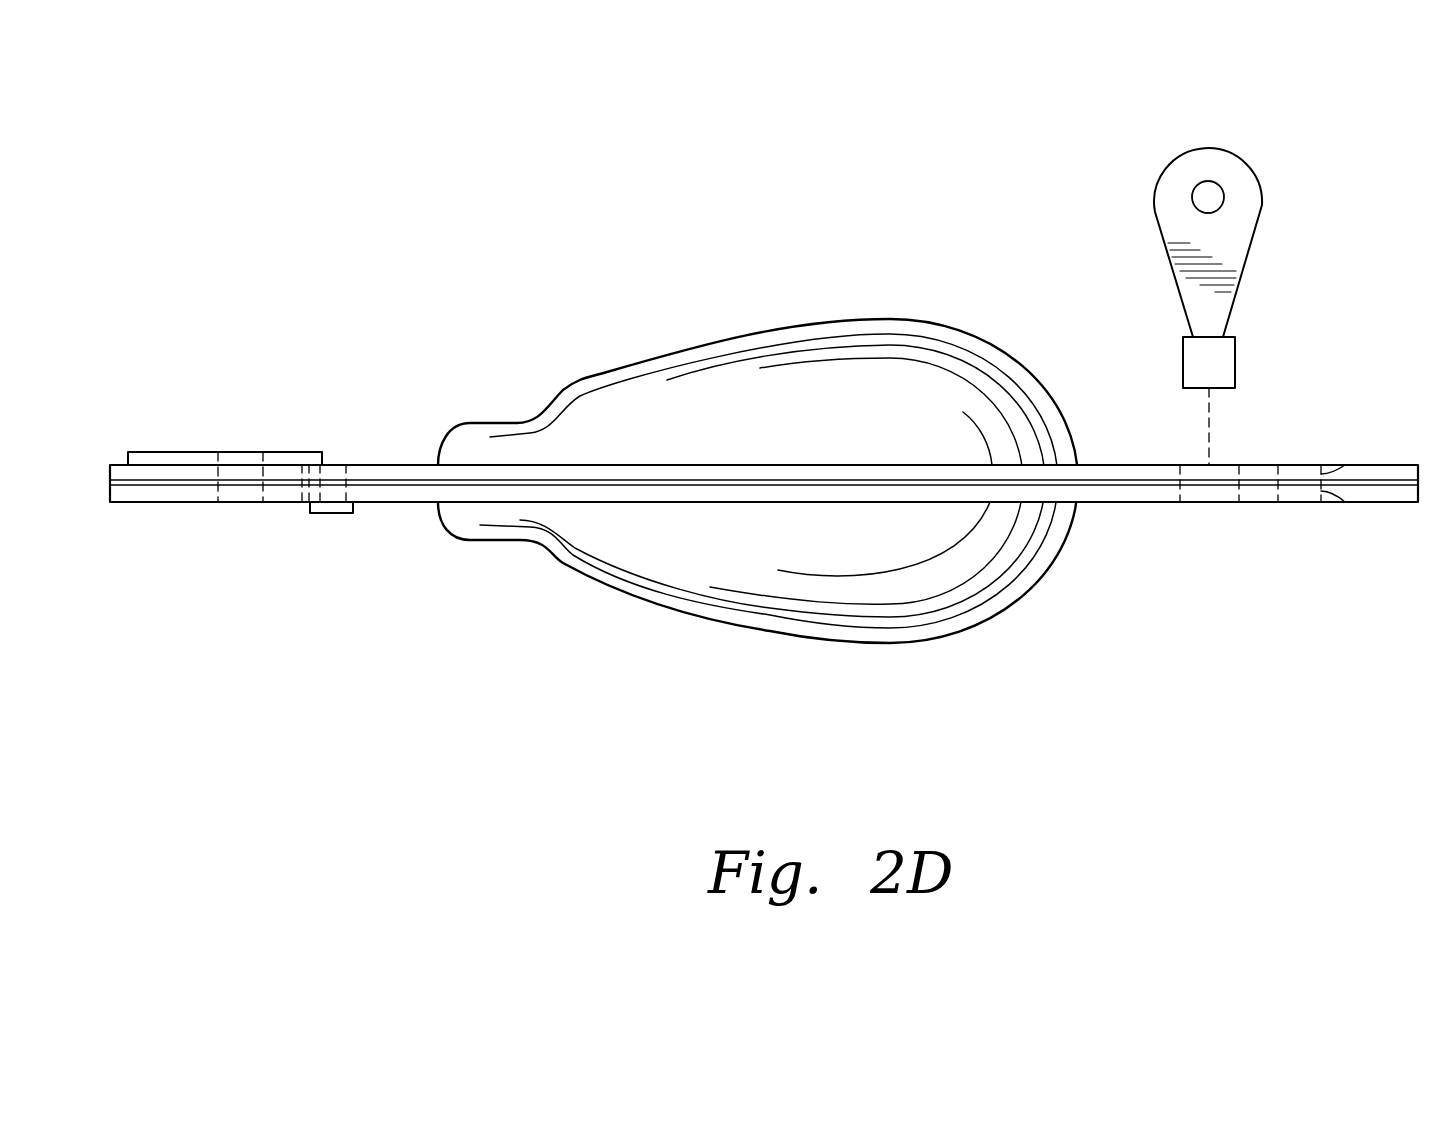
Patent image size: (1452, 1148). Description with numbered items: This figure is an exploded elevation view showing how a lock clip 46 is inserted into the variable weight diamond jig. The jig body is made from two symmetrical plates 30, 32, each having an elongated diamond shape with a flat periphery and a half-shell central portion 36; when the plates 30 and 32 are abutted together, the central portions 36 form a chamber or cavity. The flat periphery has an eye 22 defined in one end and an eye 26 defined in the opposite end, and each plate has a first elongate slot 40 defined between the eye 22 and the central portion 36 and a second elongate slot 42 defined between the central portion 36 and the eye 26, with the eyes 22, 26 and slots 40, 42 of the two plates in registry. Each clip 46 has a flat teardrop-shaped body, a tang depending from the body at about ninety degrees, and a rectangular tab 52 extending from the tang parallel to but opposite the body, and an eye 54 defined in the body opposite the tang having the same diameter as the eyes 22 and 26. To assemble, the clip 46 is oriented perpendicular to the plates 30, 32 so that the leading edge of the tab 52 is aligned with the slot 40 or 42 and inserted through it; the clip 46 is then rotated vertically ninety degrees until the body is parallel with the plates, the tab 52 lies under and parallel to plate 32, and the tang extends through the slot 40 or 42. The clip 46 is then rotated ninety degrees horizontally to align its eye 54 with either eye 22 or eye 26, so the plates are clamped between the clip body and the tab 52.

The eye 22 is at (240, 493).
The eye 26 is at (1343, 465).
The plate 30 is at (612, 472).
The plate 32 is at (660, 493).
The central portion 36 is at (822, 325).
The first elongate slot 40 is at (332, 465).
The second elongate slot 42 is at (1190, 465).
The lock clip 46 is at (285, 452).
The tab 52 is at (330, 513).
The eye 54 is at (1220, 182).